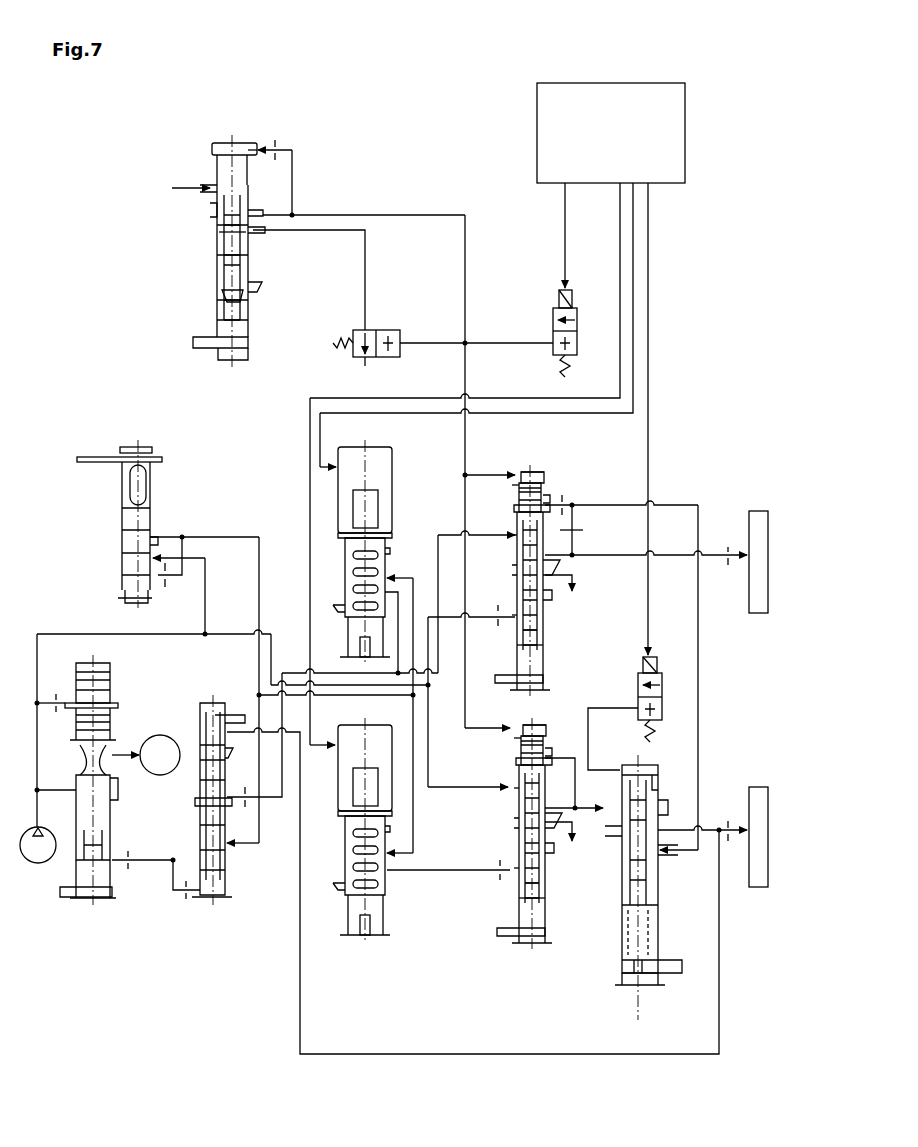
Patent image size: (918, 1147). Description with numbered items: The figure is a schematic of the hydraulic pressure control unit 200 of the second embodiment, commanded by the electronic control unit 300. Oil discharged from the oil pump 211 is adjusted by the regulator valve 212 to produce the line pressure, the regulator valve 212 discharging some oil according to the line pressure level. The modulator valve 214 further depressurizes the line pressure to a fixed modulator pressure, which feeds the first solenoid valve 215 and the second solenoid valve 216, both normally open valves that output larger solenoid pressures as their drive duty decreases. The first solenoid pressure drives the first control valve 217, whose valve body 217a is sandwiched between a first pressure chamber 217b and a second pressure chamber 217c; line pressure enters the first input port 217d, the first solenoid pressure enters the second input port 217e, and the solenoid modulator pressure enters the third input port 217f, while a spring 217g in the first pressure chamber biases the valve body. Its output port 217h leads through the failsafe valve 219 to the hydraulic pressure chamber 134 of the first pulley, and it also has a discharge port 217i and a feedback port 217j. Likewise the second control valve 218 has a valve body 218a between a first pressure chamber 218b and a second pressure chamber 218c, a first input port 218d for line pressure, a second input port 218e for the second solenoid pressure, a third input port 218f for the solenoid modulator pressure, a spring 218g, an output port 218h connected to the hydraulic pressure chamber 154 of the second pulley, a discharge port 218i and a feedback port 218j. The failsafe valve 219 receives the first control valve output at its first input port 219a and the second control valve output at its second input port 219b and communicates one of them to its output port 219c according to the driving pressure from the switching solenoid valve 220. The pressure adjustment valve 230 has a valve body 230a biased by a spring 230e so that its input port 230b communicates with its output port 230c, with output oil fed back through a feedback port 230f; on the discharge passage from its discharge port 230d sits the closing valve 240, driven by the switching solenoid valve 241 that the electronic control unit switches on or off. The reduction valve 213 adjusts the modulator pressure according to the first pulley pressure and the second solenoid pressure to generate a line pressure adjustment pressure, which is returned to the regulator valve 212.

The hydraulic pressure control unit 200 is at (76, 322).
The oil pump 211 is at (37, 863).
The regulator valve 212 is at (111, 785).
The reduction valve 213 is at (226, 855).
The modulator valve 214 is at (150, 492).
The first solenoid valve 215 is at (337, 775).
The second solenoid valve 216 is at (393, 462).
The first control valve 217 is at (597, 930).
The valve body 217a is at (517, 840).
The first pressure chamber 217b is at (546, 882).
The second pressure chamber 217c is at (532, 722).
The first input port 217d is at (519, 799).
The second input port 217e is at (514, 869).
The third input port 217f is at (520, 738).
The spring 217g is at (517, 895).
The output port 217h is at (550, 803).
The discharge port 217i is at (550, 836).
The feedback port 217j is at (545, 753).
The second control valve 218 is at (603, 681).
The valve body 218a is at (517, 590).
The first pressure chamber 218b is at (547, 630).
The second pressure chamber 218c is at (532, 470).
The first input port 218d is at (517, 545).
The second input port 218e is at (517, 615).
The third input port 218f is at (517, 485).
The spring 218g is at (517, 645).
The output port 218h is at (555, 565).
The discharge port 218i is at (547, 580).
The feedback port 218j is at (548, 500).
The failsafe valve 219 is at (622, 925).
The first input port 219a is at (607, 820).
The second input port 219b is at (660, 860).
The output port 219c is at (650, 818).
The switching solenoid valve 220 is at (657, 670).
The pressure adjustment valve 230 is at (312, 346).
The valve body 230a is at (217, 247).
The input port 230b is at (207, 204).
The output port 230c is at (262, 210).
The discharge port 230d is at (256, 238).
The spring 230e is at (217, 289).
The feedback port 230f is at (250, 141).
The closing valve 240 is at (395, 330).
The switching solenoid valve 241 is at (552, 311).
The electronic control unit 300 is at (686, 133).
The hydraulic pressure chamber 154 is at (756, 613).
The hydraulic pressure chamber 134 is at (752, 887).